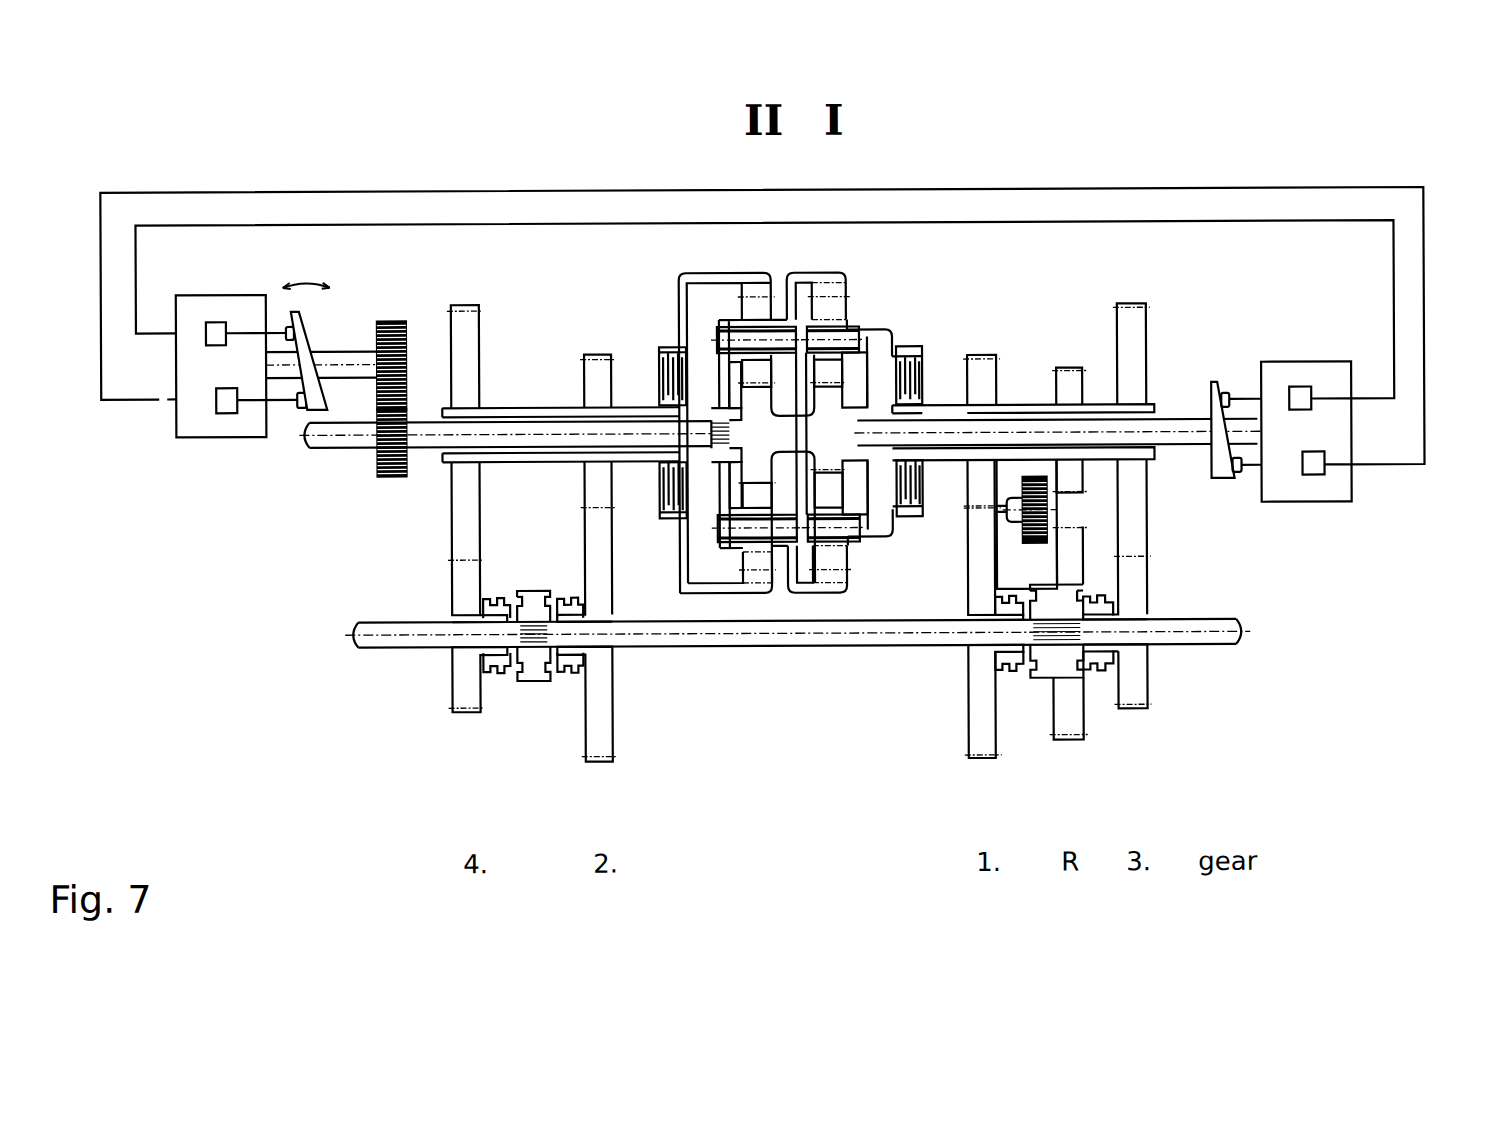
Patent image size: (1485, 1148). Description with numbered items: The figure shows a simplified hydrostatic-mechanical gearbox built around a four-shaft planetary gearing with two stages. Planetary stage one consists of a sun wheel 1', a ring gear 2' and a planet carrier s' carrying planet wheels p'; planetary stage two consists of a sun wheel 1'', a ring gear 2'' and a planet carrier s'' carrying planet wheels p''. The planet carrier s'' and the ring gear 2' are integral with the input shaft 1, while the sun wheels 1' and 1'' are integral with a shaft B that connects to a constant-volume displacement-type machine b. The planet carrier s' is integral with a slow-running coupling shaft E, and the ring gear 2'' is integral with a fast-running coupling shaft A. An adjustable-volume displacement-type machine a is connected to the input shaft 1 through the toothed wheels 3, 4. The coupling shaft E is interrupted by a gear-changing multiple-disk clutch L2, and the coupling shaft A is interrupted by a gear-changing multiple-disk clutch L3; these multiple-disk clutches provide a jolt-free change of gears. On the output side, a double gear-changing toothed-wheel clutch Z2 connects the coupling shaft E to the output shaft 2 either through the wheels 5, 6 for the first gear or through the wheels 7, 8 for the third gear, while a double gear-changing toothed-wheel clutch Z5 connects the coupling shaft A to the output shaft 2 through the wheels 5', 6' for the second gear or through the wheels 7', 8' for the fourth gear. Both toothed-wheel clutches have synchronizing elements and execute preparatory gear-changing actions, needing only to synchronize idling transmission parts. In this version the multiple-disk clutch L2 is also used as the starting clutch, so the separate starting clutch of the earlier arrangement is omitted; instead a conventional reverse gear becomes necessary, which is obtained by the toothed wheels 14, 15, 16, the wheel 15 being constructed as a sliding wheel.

The input shaft 1 is at (779, 459).
The sun wheel 1' is at (837, 433).
The sun wheel 1'' is at (763, 451).
The output shaft 2 is at (797, 609).
The ring gear 2' is at (816, 416).
The ring gear 2'' is at (754, 280).
The toothed wheel 3 is at (397, 478).
The toothed wheel 4 is at (401, 321).
The toothed wheel 5 is at (994, 377).
The toothed wheel 5' is at (580, 488).
The toothed wheel 6 is at (979, 609).
The toothed wheel 6' is at (604, 703).
The toothed wheel 7 is at (1131, 461).
The toothed wheel 7' is at (484, 463).
The toothed wheel 8 is at (1130, 676).
The toothed wheel 8' is at (461, 679).
The toothed wheel 14 is at (1077, 387).
The sliding wheel 15 is at (1028, 540).
The toothed wheel 16 is at (1077, 723).
The adjustable-volume displacement-type machine a is at (200, 437).
The constant-volume displacement-type machine b is at (1333, 493).
The fast-running coupling shaft A is at (680, 558).
The shaft B is at (1178, 427).
The slow-running coupling shaft E is at (892, 537).
The gear-changing multiple-disk clutch L2 is at (917, 407).
The gear-changing multiple-disk clutch L3 is at (663, 409).
The double gear-changing toothed-wheel clutch Z2 is at (1054, 693).
The double gear-changing toothed-wheel clutch Z5 is at (533, 668).
The planet wheels p' is at (845, 432).
The planet wheels p'' is at (739, 438).
The planet carrier s' is at (860, 433).
The planet carrier s'' is at (715, 435).